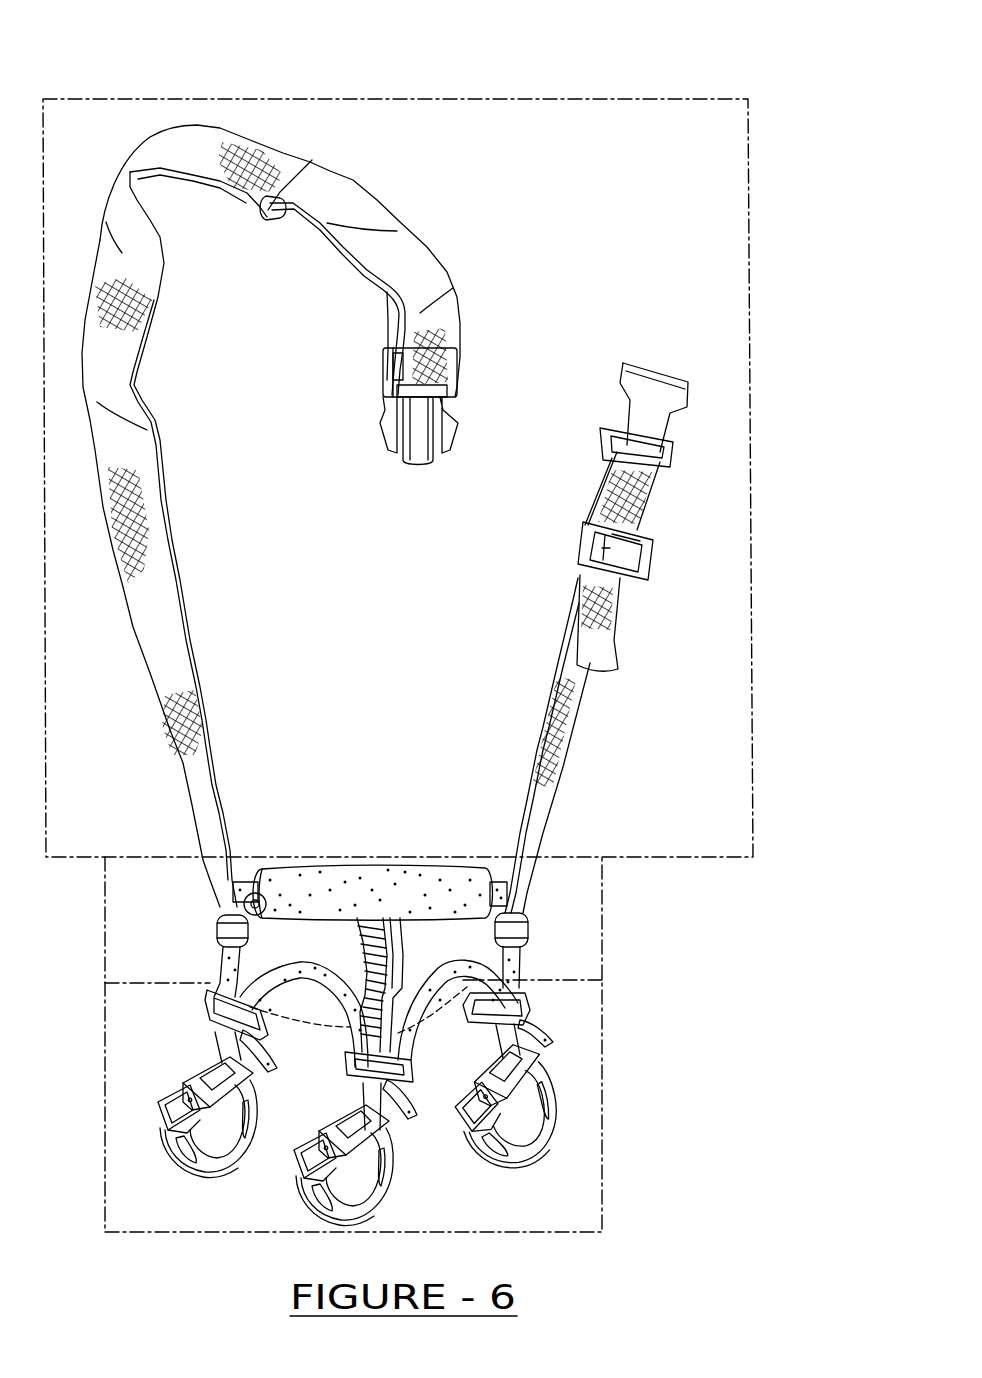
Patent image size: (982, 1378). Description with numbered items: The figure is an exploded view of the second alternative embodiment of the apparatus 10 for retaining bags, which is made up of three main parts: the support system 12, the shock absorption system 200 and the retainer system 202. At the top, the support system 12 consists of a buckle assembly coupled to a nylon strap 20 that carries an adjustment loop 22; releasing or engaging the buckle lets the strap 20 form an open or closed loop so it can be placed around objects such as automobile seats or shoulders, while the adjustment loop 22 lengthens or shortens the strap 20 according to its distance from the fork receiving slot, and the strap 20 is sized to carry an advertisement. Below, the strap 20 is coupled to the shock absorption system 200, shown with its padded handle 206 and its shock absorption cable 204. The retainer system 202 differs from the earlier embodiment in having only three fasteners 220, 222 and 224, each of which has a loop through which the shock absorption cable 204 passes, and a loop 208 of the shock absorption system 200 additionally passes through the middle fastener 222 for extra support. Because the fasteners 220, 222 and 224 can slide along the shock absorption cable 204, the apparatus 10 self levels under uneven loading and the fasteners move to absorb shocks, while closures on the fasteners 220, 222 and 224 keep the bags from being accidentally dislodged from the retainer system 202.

The apparatus for retaining bags 10 is at (578, 86).
The support system 12 is at (707, 303).
The strap 20 is at (553, 697).
The adjustment loop 22 is at (580, 546).
The shock absorption system 200 is at (589, 918).
The retainer system 202 is at (589, 1087).
The shock absorption cable 204 is at (508, 965).
The padded handle 206 is at (385, 880).
The loop 208 is at (393, 955).
The fastener 220 is at (540, 1140).
The fastener 222 is at (390, 1160).
The fastener 224 is at (168, 1148).